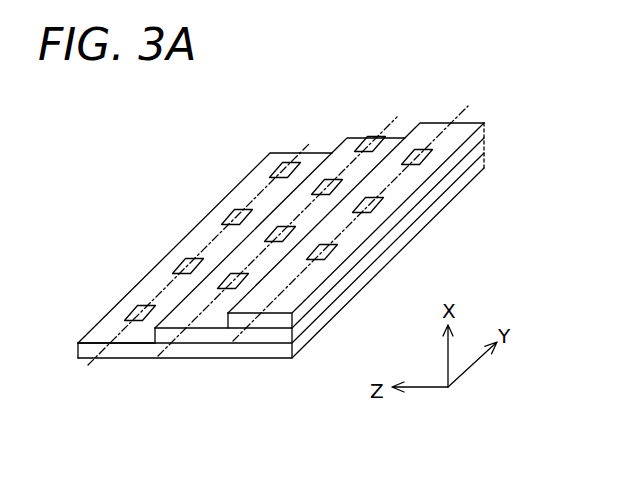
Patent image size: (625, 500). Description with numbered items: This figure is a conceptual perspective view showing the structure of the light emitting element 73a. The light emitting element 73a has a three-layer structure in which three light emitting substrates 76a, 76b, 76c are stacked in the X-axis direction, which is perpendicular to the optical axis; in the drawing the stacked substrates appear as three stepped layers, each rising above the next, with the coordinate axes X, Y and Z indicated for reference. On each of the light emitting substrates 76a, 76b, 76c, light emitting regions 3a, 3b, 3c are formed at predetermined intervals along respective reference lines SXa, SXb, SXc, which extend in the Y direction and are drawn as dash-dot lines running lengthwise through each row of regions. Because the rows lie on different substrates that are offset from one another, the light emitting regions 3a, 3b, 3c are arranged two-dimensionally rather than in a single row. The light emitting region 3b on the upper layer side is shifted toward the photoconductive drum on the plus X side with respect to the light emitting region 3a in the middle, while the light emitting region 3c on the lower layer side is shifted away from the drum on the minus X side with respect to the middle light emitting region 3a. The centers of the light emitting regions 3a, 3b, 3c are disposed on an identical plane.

The light emitting region 3a is at (230, 274).
The light emitting region 3b is at (370, 198).
The light emitting region 3c is at (237, 209).
The light emitting element 73a is at (318, 186).
The light emitting substrate 76a is at (485, 147).
The light emitting substrate 76b is at (485, 123).
The light emitting substrate 76c is at (483, 166).
The reference line SXa is at (179, 335).
The reference line SXb is at (240, 334).
The reference line SXc is at (120, 334).